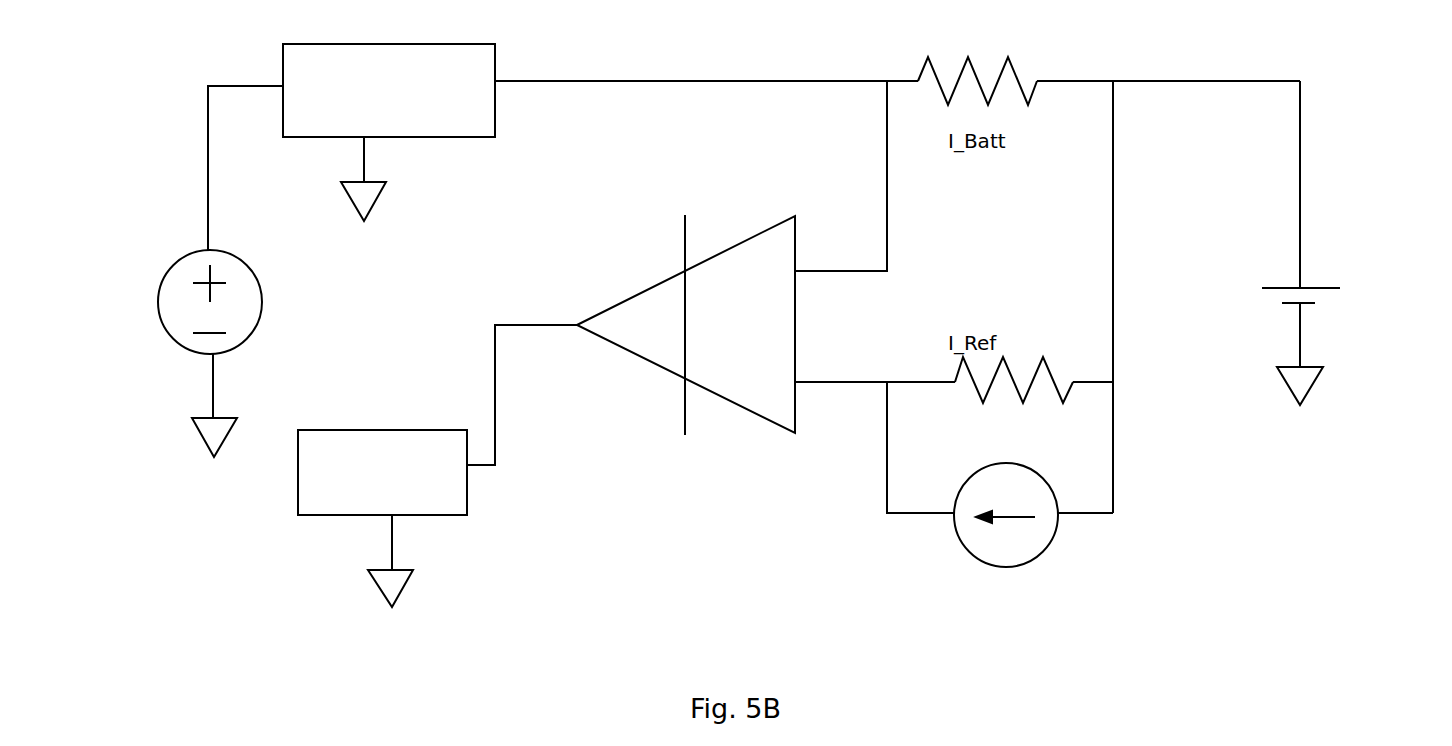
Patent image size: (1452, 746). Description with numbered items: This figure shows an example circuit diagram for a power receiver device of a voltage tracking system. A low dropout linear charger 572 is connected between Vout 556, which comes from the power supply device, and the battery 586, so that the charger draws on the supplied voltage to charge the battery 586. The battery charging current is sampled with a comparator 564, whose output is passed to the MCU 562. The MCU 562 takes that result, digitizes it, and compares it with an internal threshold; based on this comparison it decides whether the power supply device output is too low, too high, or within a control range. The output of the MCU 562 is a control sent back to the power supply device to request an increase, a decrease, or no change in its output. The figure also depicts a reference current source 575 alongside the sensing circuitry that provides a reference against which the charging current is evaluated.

The Vout 556 is at (158, 288).
The MCU 562 is at (382, 518).
The comparator 564 is at (650, 298).
The low dropout linear charger 572 is at (389, 132).
The reference current source 575 is at (963, 553).
The battery 586 is at (1323, 270).